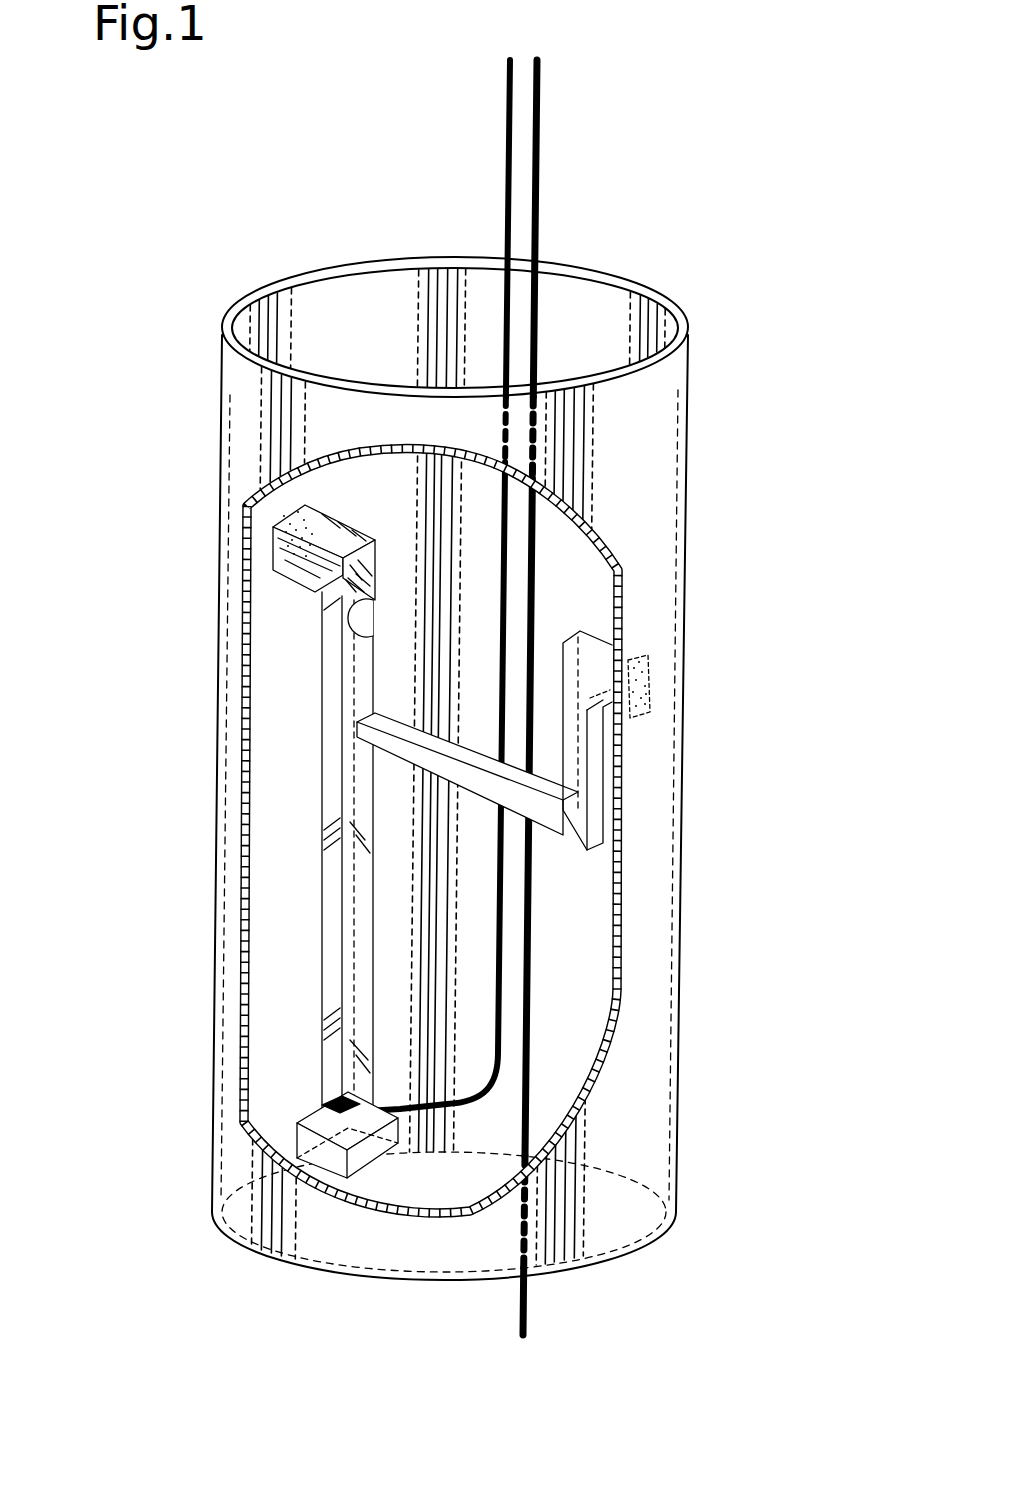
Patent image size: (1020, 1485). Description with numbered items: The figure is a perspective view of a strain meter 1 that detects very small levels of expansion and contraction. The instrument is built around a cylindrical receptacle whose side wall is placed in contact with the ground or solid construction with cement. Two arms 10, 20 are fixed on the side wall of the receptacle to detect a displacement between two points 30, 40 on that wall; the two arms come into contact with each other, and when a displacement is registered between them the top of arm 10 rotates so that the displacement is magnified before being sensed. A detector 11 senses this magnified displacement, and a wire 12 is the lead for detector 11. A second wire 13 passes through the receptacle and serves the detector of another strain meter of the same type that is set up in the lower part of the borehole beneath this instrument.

The sensor device 1 is at (212, 508).
The arm 10 is at (317, 590).
The detector 11 is at (297, 1121).
The wire 12 is at (506, 172).
The wire 13 is at (540, 202).
The arm 20 is at (414, 752).
The point 30 is at (290, 527).
The point 40 is at (638, 678).